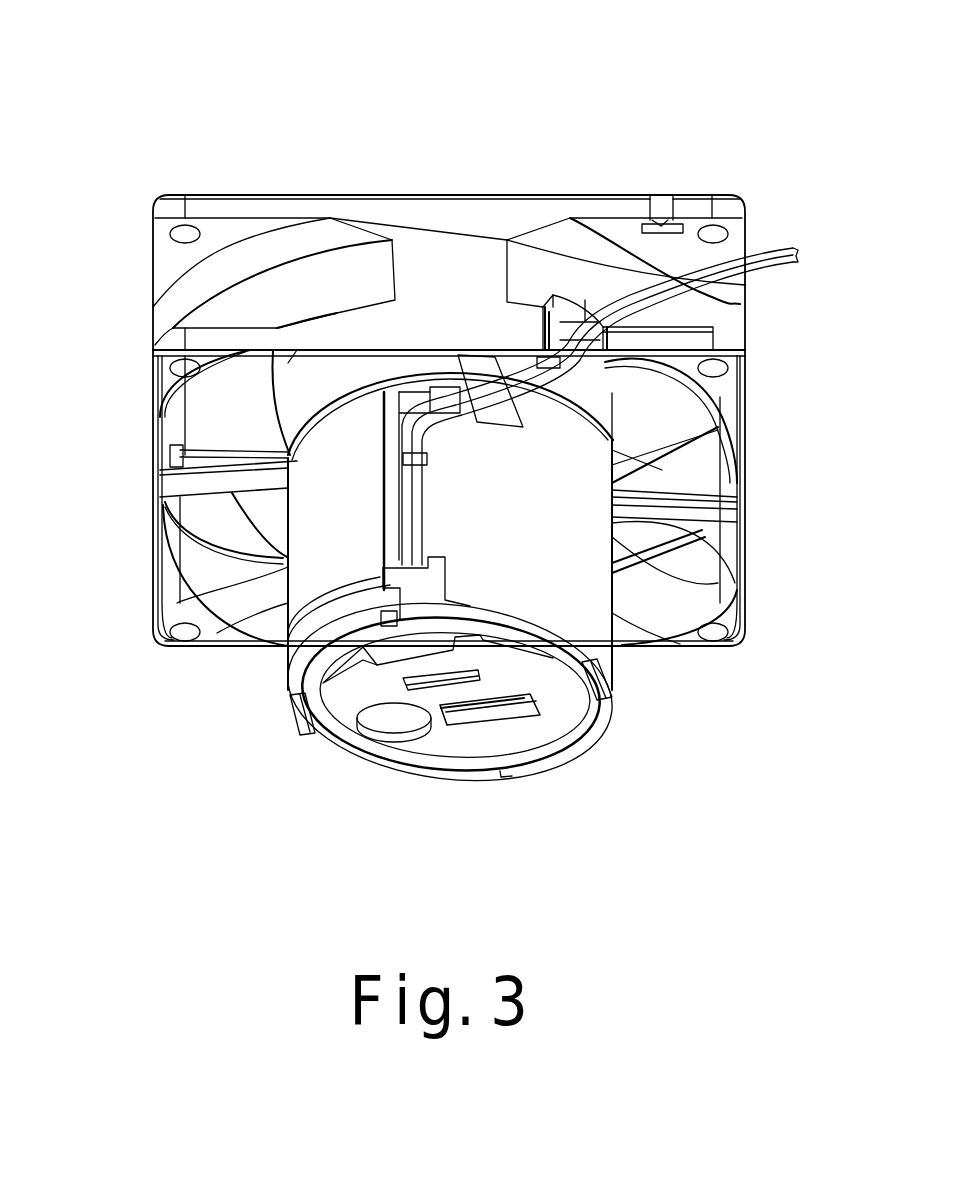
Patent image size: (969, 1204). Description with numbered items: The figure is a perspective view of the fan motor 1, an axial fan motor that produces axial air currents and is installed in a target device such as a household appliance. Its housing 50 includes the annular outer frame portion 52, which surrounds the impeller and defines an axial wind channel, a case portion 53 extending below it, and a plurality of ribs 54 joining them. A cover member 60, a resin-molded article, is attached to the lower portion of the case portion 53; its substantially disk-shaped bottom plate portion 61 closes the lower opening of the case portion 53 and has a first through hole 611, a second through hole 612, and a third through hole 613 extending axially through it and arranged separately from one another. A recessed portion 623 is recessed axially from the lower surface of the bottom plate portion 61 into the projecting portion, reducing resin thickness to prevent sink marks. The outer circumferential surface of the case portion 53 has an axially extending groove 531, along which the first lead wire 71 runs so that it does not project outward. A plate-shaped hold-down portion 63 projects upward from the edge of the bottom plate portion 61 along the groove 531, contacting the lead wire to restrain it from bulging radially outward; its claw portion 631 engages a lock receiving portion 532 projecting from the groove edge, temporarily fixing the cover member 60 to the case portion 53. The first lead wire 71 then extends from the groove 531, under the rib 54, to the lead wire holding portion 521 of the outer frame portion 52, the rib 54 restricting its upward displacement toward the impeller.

The fan motor 1 is at (298, 108).
The housing 50 is at (716, 186).
The outer frame portion 52 is at (527, 207).
The rib 54 is at (483, 363).
The first lead wire 71 is at (777, 262).
The lead wire holding portion 521 is at (740, 380).
The case portion 53 is at (590, 555).
The groove 531 is at (399, 532).
The claw portion 631 is at (380, 617).
The lock receiving portion 532 is at (350, 670).
The recessed portion 623 is at (293, 718).
The cover member 60 is at (334, 772).
The bottom plate portion 61 is at (560, 710).
The first through hole 611 is at (391, 722).
The hold-down portion 63 is at (463, 685).
The third through hole 613 is at (517, 713).
The second through hole 612 is at (515, 760).